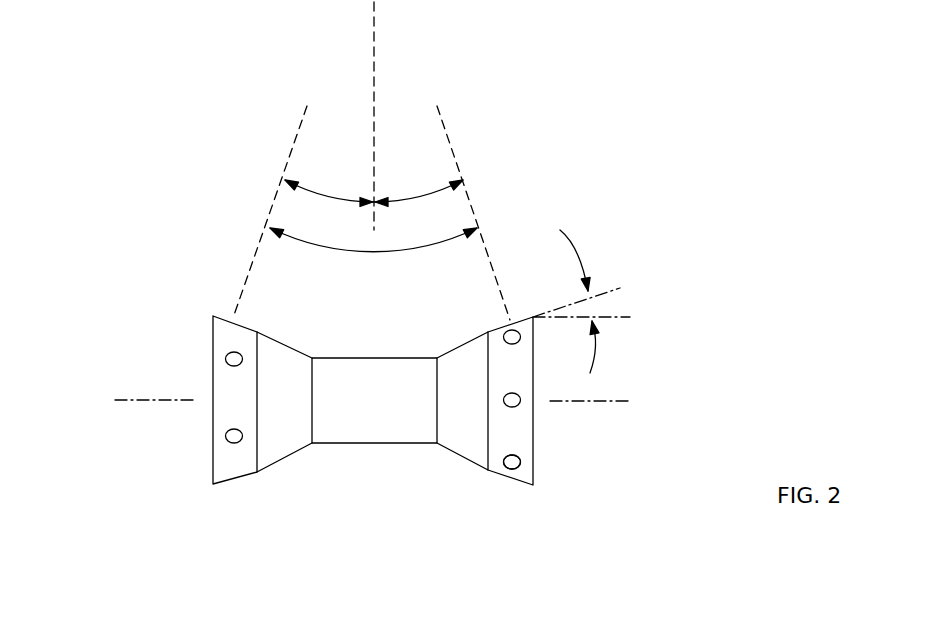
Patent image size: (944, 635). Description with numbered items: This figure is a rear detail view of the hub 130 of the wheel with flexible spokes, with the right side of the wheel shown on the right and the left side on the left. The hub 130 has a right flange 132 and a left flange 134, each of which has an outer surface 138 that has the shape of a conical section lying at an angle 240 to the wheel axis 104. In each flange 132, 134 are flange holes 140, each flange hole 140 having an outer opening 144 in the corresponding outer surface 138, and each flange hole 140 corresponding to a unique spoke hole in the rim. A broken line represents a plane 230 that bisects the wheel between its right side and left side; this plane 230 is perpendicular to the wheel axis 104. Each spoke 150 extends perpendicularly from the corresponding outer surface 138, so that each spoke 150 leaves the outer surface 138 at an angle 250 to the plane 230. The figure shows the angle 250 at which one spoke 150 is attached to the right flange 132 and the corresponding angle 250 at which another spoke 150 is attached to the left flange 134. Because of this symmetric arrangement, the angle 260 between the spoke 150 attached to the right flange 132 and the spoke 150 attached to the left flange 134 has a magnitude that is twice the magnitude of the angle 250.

The wheel axis 104 is at (670, 440).
The hub 130 is at (223, 185).
The right flange 132 is at (477, 467).
The left flange 134 is at (238, 475).
The outer surface 138 is at (225, 415).
The flange hole 140 is at (233, 358).
The outer opening 144 is at (517, 467).
The spoke 150 is at (470, 196).
The plane 230 is at (370, 39).
The angle 240 is at (560, 230).
The angle 250 is at (298, 178).
The angle 260 is at (318, 247).